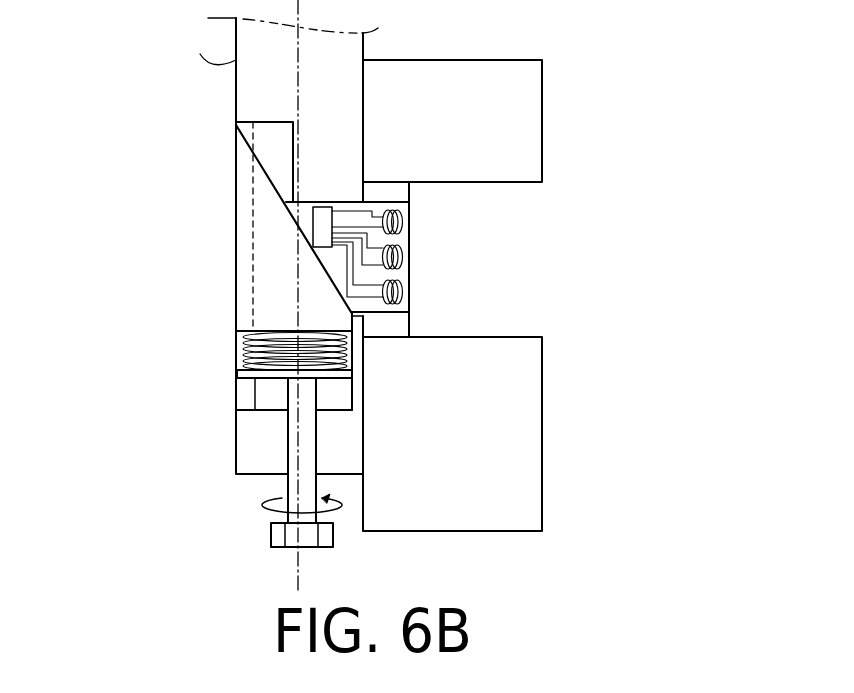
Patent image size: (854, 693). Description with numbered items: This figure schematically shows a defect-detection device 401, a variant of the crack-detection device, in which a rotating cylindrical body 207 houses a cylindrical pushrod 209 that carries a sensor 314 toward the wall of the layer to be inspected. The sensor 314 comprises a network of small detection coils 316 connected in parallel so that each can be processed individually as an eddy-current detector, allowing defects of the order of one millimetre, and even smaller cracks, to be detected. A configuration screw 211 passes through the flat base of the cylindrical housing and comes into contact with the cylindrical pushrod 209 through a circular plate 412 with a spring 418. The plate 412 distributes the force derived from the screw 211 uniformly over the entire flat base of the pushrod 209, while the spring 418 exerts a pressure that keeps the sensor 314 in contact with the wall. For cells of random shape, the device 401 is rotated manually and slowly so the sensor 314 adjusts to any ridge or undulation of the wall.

The rotating cylindrical body 207 is at (235, 65).
The defect-detection device 401 is at (608, 107).
The cylindrical pushrod 209 is at (273, 247).
The sensor 314 is at (396, 312).
The detection coils 316 is at (403, 223).
The spring 418 is at (243, 356).
The circular plate 412 is at (245, 376).
The configuration screw 211 is at (280, 532).